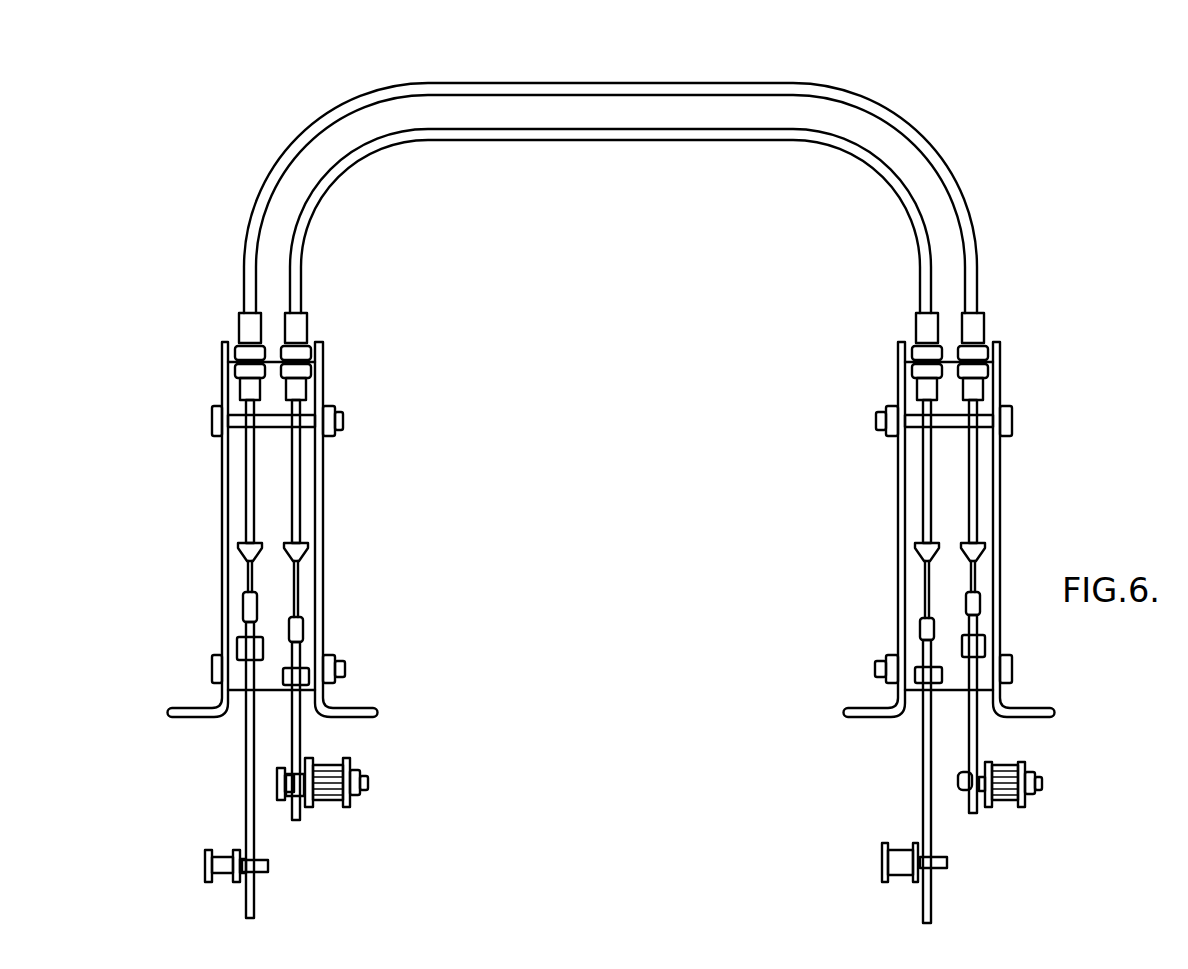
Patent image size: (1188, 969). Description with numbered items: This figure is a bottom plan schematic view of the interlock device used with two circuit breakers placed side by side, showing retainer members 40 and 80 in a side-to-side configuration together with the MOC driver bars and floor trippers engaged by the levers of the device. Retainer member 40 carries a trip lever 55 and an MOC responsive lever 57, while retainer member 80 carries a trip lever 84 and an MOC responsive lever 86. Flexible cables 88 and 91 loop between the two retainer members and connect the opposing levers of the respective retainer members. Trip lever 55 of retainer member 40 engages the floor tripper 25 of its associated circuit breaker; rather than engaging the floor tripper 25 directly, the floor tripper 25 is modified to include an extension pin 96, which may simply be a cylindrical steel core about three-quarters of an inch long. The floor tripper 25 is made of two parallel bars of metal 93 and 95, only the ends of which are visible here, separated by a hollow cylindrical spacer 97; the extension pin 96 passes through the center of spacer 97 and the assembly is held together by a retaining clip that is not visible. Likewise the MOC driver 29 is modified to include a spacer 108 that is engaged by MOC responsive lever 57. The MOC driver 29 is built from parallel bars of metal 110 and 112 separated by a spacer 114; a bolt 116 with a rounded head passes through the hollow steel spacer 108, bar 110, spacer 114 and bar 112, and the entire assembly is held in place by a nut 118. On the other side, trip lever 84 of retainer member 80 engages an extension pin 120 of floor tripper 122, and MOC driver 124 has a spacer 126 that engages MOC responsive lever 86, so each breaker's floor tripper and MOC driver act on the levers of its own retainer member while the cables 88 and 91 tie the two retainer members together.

The floor tripper 25 is at (213, 865).
The MOC driver 29 is at (300, 804).
The retainer member 40 is at (328, 542).
The trip lever 55 is at (248, 742).
The MOC responsive lever 57 is at (299, 723).
The retainer member 80 is at (895, 542).
The trip lever 84 is at (924, 765).
The MOC responsive lever 86 is at (979, 725).
The flexible cable 88 is at (309, 239).
The flexible cable 91 is at (965, 203).
The bar of metal 93 is at (205, 882).
The bar of metal 95 is at (236, 885).
The extension pin 96 is at (261, 873).
The spacer 97 is at (231, 847).
The spacer 108 is at (293, 800).
The bar of metal 110 is at (305, 760).
The bar of metal 112 is at (347, 762).
The spacer 114 is at (330, 800).
The bolt 116 is at (277, 778).
The nut 118 is at (360, 803).
The extension pin 120 is at (945, 868).
The floor tripper 122 is at (904, 868).
The MOC driver 124 is at (972, 791).
The spacer 126 is at (967, 770).